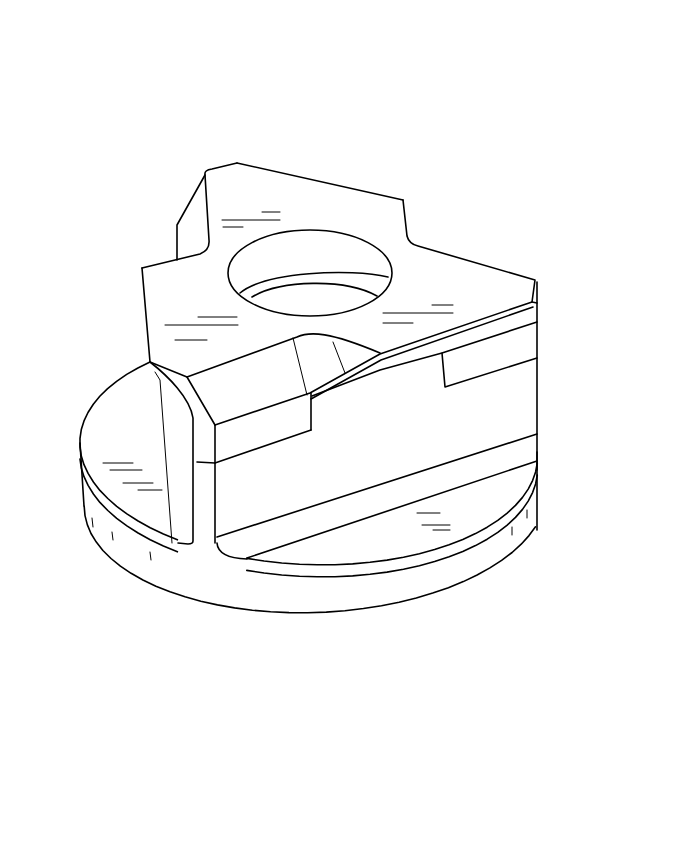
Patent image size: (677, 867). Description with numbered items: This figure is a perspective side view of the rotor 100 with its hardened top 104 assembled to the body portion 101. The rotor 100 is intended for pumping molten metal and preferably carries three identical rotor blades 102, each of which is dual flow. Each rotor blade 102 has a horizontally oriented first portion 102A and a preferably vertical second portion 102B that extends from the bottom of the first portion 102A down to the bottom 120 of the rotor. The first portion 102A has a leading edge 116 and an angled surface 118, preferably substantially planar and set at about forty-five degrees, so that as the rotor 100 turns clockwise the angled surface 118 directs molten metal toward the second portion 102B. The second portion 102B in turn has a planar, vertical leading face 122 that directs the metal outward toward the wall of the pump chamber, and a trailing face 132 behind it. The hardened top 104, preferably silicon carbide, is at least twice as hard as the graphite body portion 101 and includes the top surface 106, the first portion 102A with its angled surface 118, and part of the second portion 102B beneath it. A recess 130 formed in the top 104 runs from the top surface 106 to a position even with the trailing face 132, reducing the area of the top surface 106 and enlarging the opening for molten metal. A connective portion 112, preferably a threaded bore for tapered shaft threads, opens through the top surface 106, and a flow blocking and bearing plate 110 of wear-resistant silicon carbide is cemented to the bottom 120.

The rotor 100 is at (441, 96).
The body portion 101 is at (368, 485).
The rotor blade 102 is at (367, 172).
The first portion 102A is at (148, 347).
The second portion 102B is at (192, 427).
The hardened top 104 is at (444, 271).
The top surface 106 is at (281, 183).
The flow blocking and bearing plate 110 is at (205, 599).
The connective portion 112 is at (328, 293).
The leading edge 116 is at (315, 178).
The angled surface 118 is at (416, 352).
The bottom 120 is at (465, 512).
The leading face 122 is at (537, 464).
The recess 130 is at (186, 229).
The trailing face 132 is at (273, 513).